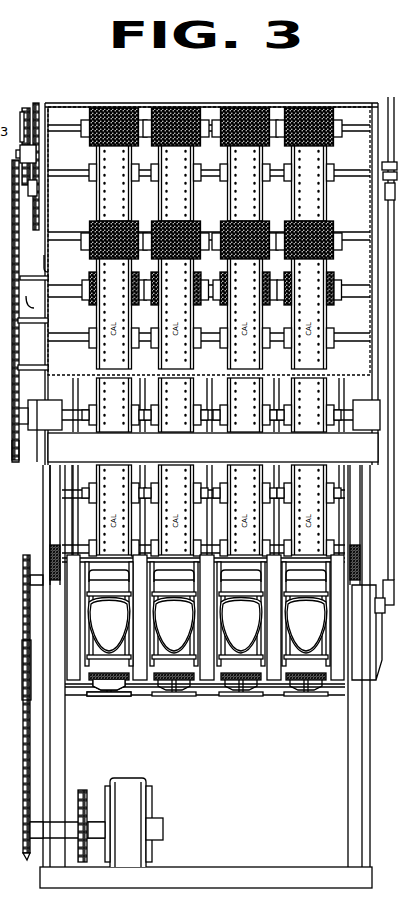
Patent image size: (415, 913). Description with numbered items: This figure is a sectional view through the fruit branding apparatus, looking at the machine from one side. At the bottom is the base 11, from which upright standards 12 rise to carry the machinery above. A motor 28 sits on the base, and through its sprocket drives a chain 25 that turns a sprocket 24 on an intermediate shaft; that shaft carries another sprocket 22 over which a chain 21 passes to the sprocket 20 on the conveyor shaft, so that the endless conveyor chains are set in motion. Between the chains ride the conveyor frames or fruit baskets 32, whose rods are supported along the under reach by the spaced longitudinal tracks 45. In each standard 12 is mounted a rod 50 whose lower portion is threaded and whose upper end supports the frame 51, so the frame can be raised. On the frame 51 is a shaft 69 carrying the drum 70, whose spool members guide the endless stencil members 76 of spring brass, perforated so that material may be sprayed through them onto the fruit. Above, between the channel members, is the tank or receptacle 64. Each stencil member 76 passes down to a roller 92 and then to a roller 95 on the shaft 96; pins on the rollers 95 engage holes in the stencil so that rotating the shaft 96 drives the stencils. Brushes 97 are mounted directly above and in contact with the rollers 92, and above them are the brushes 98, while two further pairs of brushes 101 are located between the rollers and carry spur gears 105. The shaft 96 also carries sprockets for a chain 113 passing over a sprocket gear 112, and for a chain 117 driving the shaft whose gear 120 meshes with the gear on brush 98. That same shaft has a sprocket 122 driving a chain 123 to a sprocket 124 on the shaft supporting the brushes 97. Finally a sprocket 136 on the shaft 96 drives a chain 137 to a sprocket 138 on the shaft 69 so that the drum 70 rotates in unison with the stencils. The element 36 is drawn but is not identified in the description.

The base 11 is at (278, 870).
The standards 12 is at (60, 714).
The sprocket 20 is at (34, 548).
The chain 21 is at (30, 742).
The sprocket 22 is at (28, 858).
The sprocket 24 is at (82, 790).
The chain 25 is at (88, 859).
The motor 28 is at (140, 782).
The conveyor frames 32 is at (126, 697).
The guide 36 is at (11, 149).
The longitudinal tracks 45 is at (138, 621).
The rod 50 is at (55, 531).
The frame 51 is at (52, 455).
The tank or receptacle 64 is at (371, 112).
The shaft 69 is at (274, 412).
The drum 70 is at (72, 510).
The stencil member 76 is at (118, 197).
The roller 92 is at (154, 355).
The roller 95 is at (160, 154).
The shaft 96 is at (62, 172).
The brushes 97 is at (198, 305).
The brush 98 is at (156, 255).
The brush 101 is at (165, 108).
The spur gear 105 is at (37, 106).
The sprocket gear 112 is at (27, 108).
The chain 113 is at (20, 127).
The chain 117 is at (37, 191).
The gear 120 is at (48, 263).
The sprocket 122 is at (27, 232).
The chain 123 is at (48, 279).
The sprocket 124 is at (34, 305).
The sprocket 136 is at (18, 162).
The chain 137 is at (48, 321).
The sprocket 138 is at (15, 462).